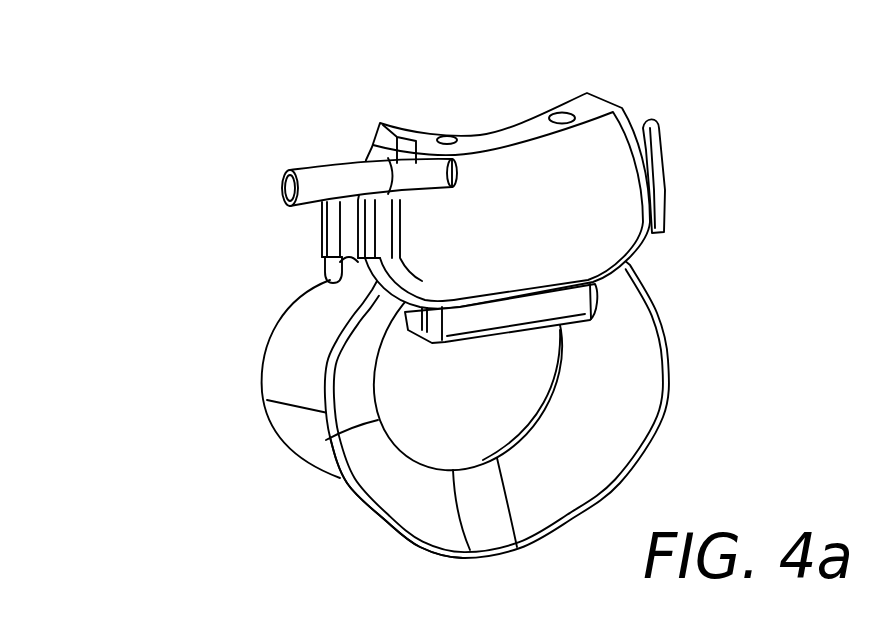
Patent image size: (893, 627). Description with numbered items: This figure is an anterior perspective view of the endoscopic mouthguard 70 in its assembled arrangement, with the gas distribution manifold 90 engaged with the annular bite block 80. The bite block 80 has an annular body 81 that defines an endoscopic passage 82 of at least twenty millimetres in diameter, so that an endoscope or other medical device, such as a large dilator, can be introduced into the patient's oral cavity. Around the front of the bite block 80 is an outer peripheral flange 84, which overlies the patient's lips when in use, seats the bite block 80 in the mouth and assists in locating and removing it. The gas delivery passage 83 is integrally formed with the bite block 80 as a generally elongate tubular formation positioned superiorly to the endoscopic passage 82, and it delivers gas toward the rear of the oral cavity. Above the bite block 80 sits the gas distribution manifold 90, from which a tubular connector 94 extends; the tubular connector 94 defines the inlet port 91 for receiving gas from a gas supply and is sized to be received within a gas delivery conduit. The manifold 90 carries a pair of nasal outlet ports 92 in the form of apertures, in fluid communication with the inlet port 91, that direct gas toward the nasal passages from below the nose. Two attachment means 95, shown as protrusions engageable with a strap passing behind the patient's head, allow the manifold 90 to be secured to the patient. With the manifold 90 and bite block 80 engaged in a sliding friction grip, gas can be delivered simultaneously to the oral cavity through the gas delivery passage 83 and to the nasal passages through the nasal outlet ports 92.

The endoscopic mouthguard 70 is at (150, 331).
The annular bite block 80 is at (303, 466).
The annular body 81 is at (632, 364).
The endoscopic passage 82 is at (493, 397).
The gas delivery passage 83 is at (570, 303).
The outer peripheral flange 84 is at (380, 540).
The gas distribution manifold 90 is at (378, 147).
The inlet port 91 is at (286, 186).
The nasal outlet ports 92 is at (556, 112).
The tubular connector 94 is at (340, 175).
The attachment means 95 is at (330, 270).